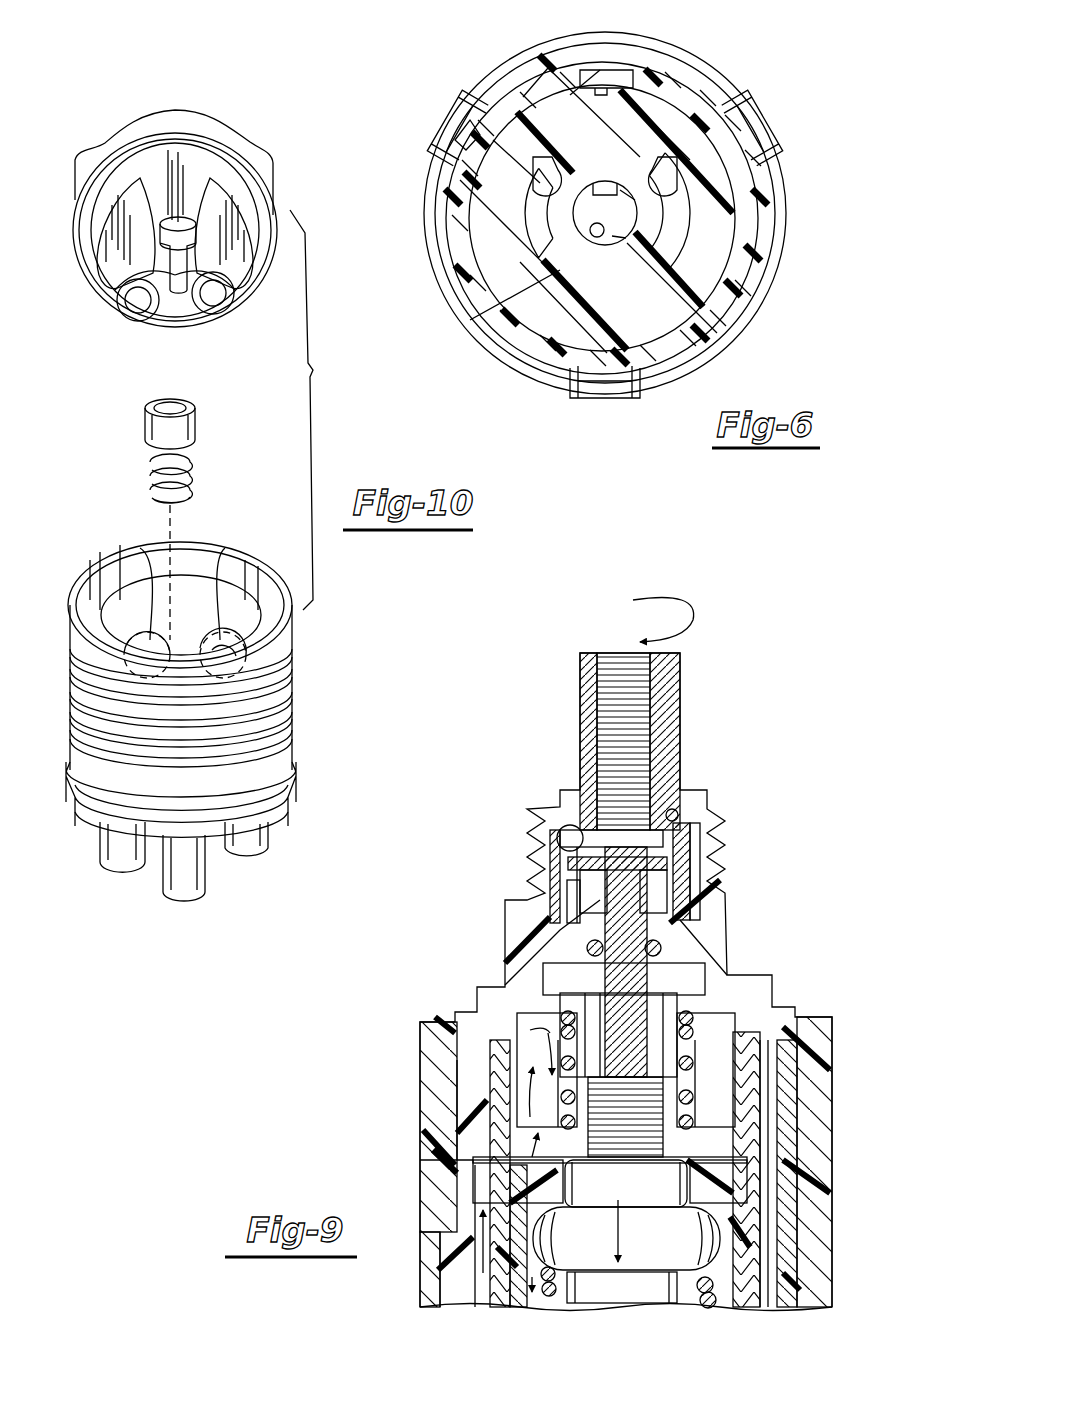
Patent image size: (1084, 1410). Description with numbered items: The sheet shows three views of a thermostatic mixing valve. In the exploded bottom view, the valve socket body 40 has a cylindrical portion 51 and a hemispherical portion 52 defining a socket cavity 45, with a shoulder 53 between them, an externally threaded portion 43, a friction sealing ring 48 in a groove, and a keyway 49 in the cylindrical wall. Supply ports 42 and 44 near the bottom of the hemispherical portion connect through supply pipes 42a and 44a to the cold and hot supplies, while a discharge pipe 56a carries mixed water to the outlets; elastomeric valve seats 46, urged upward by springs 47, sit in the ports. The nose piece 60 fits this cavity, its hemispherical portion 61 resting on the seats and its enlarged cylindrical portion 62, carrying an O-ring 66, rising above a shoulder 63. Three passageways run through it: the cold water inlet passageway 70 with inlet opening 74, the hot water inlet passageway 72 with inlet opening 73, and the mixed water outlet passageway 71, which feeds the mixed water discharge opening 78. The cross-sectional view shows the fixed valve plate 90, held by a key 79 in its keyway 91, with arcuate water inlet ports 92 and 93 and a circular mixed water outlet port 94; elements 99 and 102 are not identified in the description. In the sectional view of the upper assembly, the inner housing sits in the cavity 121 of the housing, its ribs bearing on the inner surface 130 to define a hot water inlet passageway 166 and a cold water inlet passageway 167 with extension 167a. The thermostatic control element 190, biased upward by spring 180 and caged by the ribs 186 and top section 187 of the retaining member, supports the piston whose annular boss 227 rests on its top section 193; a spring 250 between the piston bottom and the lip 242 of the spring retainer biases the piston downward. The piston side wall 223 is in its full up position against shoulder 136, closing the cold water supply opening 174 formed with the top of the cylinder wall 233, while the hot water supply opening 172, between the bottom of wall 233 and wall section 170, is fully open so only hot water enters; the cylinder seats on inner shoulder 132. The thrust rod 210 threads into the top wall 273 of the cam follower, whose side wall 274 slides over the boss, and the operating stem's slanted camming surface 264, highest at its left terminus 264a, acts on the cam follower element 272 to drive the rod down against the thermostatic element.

In FIG. 10, the valve socket body 40 is at (72, 675).
In FIG. 10, the supply port 42 is at (222, 562).
In FIG. 10, the supply pipe 42a is at (258, 834).
In FIG. 10, the externally threaded portion 43 is at (295, 660).
In FIG. 10, the supply port 44 is at (135, 548).
In FIG. 10, the supply pipe 44a is at (112, 835).
In FIG. 10, the socket cavity 45 is at (202, 619).
In FIG. 10, the valve seats 46 is at (196, 422).
In FIG. 10, the springs 47 is at (192, 480).
In FIG. 10, the friction sealing ring 48 is at (75, 712).
In FIG. 10, the keyway 49 is at (290, 597).
In FIG. 10, the cylindrical portion 51 is at (230, 540).
In FIG. 10, the hemispherical portion 52 is at (92, 620).
In FIG. 10, the shoulder 53 is at (98, 568).
In FIG. 10, the discharge pipe 56a is at (165, 905).
In FIG. 10, the nose piece 60 is at (74, 245).
In FIG. 10, the hemispherical portion 61 is at (95, 270).
In FIG. 10, the cylindrical portion 62 is at (262, 160).
In FIG. 10, the shoulder 63 is at (263, 208).
In FIG. 10, the O-ring 66 is at (80, 177).
In FIG. 6, the cold water inlet passageway 70 is at (770, 178).
In FIG. 10, the cold water inlet passageway 70 is at (190, 310).
In FIG. 10, the mixed water outlet passageway 71 is at (180, 310).
In FIG. 6, the hot water inlet passageway 72 is at (455, 132).
In FIG. 10, the hot water inlet passageway 72 is at (110, 300).
In FIG. 10, the inlet opening 73 is at (136, 320).
In FIG. 10, the inlet opening 74 is at (232, 312).
In FIG. 6, the mixed water discharge opening 78 is at (575, 222).
In FIG. 6, the key 79 is at (625, 72).
In FIG. 6, the fixed valve plate 90 is at (690, 300).
In FIG. 6, the keyway 91 is at (600, 80).
In FIG. 6, the water inlet port 92 is at (525, 212).
In FIG. 6, the water inlet port 93 is at (700, 212).
In FIG. 6, the mixed water outlet port 94 is at (555, 285).
In FIG. 6, the channel 99 is at (735, 262).
In FIG. 6, the locating notch 102 is at (468, 110).
In FIG. 9, the cavity 121 is at (660, 890).
In FIG. 9, the inner surface 130 is at (767, 1103).
In FIG. 9, the inner shoulder 132 is at (515, 1042).
In FIG. 9, the shoulder 136 is at (440, 1022).
In FIG. 9, the hot water inlet passageway 166 is at (490, 1283).
In FIG. 9, the cold water inlet passageway 167 is at (763, 1197).
In FIG. 9, the cold water inlet passageway extension 167a is at (767, 1077).
In FIG. 9, the wall section 170 is at (555, 1187).
In FIG. 9, the hot water supply opening 172 is at (555, 1168).
In FIG. 9, the cold water supply opening 174 is at (777, 1047).
In FIG. 9, the spring 180 is at (720, 1293).
In FIG. 9, the ribs 186 is at (520, 1237).
In FIG. 9, the top section 187 is at (675, 1170).
In FIG. 9, the thermostatic control element 190 is at (737, 1273).
In FIG. 9, the top section 193 is at (763, 1180).
In FIG. 9, the temperature control thrust rod 210 is at (727, 960).
In FIG. 9, the side wall 223 is at (480, 1067).
In FIG. 9, the annular boss 227 is at (557, 1250).
In FIG. 9, the wall 233 is at (482, 1100).
In FIG. 9, the lip 242 is at (565, 995).
In FIG. 9, the spring 250 is at (668, 1090).
In FIG. 9, the camming surface 264 is at (688, 790).
In FIG. 9, the left terminus 264a is at (680, 808).
In FIG. 9, the cam follower element 272 is at (700, 825).
In FIG. 9, the top wall 273 is at (556, 822).
In FIG. 9, the side wall 274 is at (555, 870).